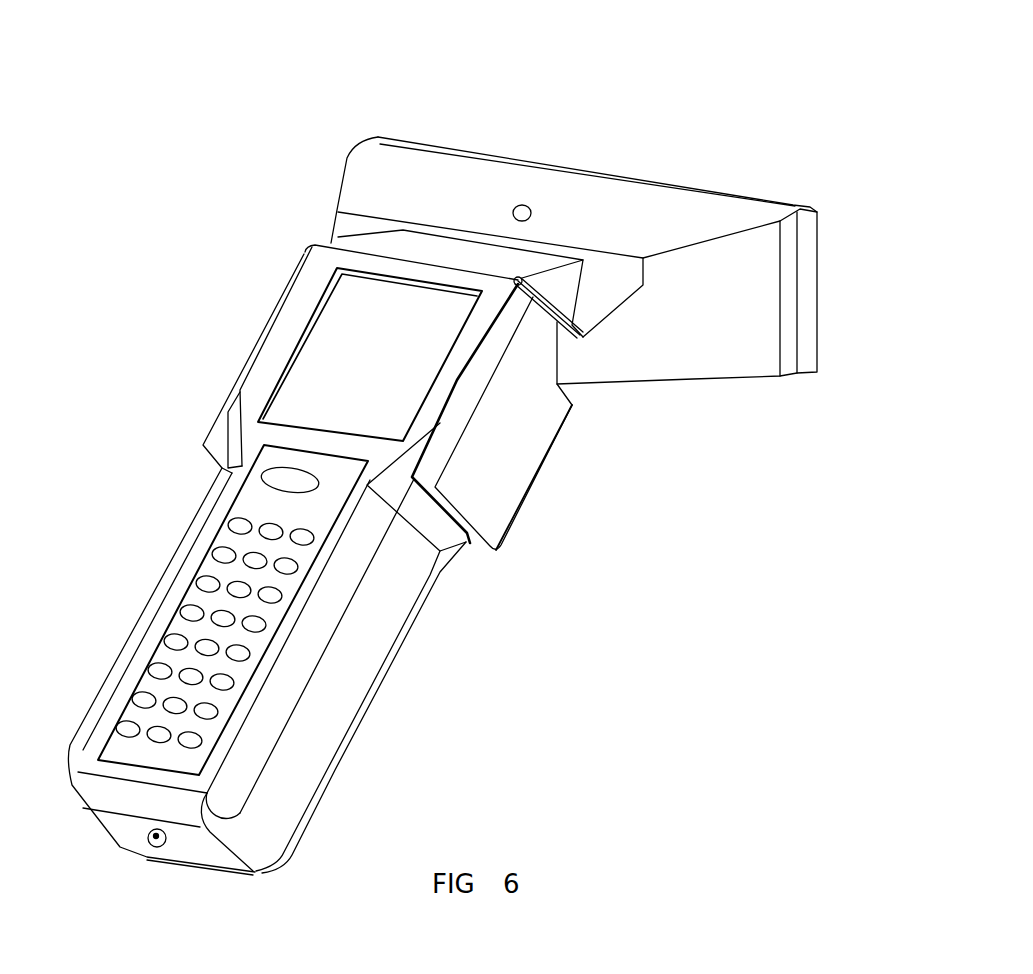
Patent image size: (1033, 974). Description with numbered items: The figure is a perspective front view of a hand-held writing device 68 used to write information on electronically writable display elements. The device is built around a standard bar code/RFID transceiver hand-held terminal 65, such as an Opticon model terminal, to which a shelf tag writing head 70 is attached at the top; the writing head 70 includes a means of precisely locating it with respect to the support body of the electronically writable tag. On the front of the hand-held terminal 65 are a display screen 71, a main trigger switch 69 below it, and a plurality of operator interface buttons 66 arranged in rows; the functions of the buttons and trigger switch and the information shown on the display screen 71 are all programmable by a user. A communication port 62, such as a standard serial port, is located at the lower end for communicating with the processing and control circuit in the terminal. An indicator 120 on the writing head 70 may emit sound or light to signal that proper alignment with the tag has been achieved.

The hand-held writing device 68 is at (253, 213).
The shelf tag writing head 70 is at (688, 382).
The indicator 120 is at (532, 203).
The display screen 71 is at (307, 362).
The main trigger switch 69 is at (262, 483).
The operator interface buttons 66 is at (170, 632).
The hand-held terminal 65 is at (387, 677).
The communication port 62 is at (145, 845).